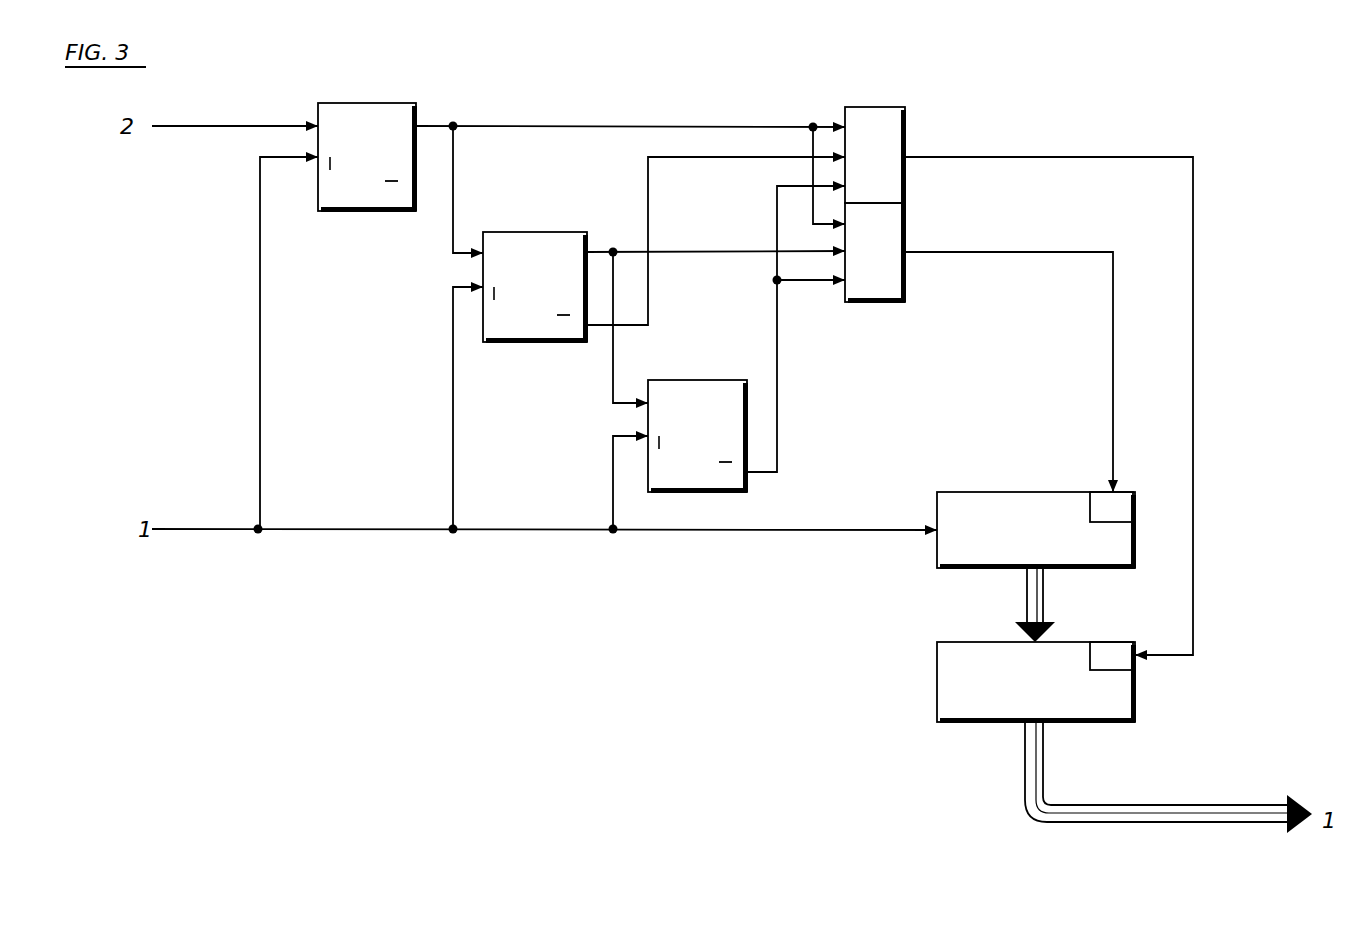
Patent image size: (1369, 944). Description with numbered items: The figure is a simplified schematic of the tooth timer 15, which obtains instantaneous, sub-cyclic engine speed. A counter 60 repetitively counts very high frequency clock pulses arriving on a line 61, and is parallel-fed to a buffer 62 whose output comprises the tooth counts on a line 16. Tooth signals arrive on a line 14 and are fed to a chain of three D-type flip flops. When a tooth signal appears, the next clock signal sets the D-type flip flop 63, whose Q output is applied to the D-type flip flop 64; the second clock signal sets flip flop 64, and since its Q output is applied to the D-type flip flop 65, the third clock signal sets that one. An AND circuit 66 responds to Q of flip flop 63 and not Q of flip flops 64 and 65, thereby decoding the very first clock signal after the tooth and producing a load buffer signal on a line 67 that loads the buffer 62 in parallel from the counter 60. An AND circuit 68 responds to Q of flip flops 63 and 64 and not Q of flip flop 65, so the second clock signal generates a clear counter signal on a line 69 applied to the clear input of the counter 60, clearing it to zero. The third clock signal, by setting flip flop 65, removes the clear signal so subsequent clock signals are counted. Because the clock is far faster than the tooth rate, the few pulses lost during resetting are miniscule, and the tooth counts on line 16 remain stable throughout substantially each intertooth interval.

The tooth signal line 14 is at (273, 127).
The tooth timer 15 is at (1068, 108).
The tooth counts line 16 is at (1190, 818).
The counter 60 is at (1008, 492).
The clock line 61 is at (800, 529).
The buffer 62 is at (937, 681).
The first D-type flip flop 63 is at (368, 103).
The second D-type flip flop 64 is at (530, 232).
The third D-type flip flop 65 is at (694, 380).
The first AND circuit 66 is at (870, 107).
The load buffer line 67 is at (1138, 157).
The second AND circuit 68 is at (875, 300).
The clear counter line 69 is at (1113, 350).